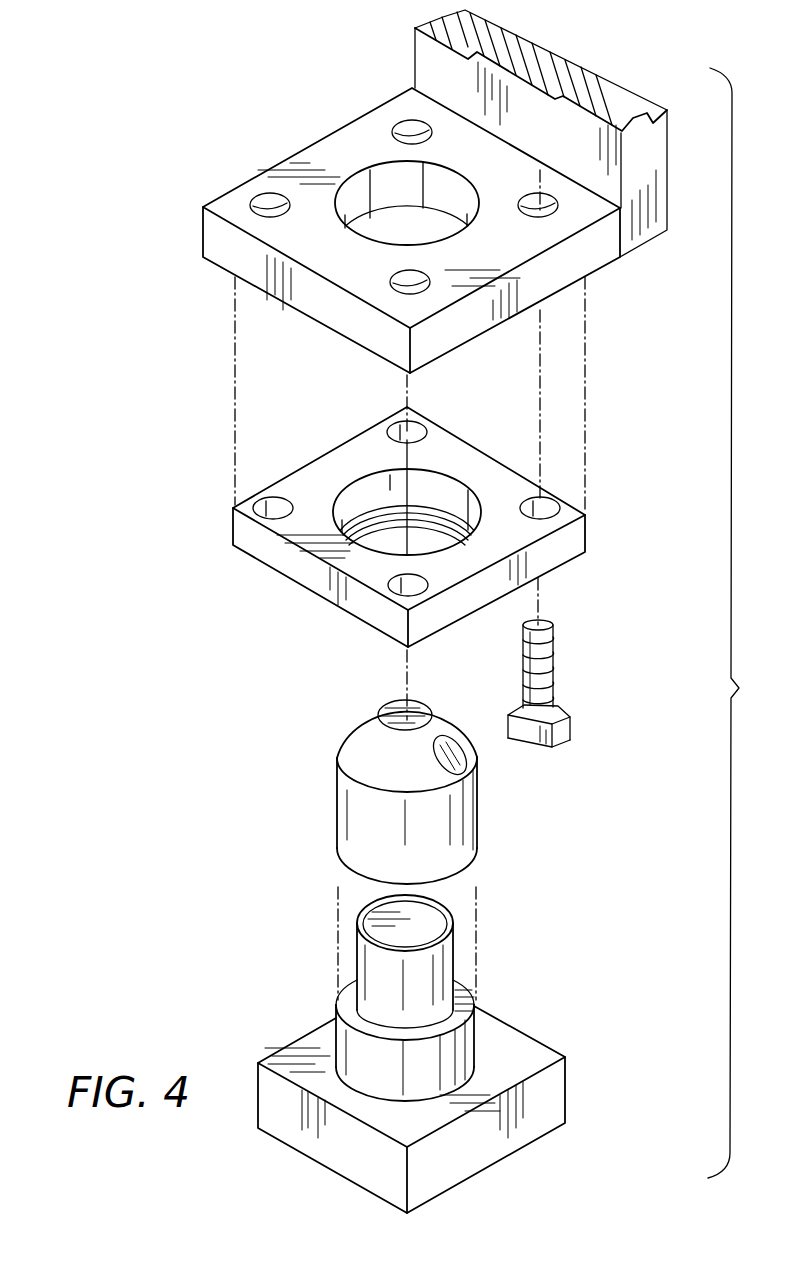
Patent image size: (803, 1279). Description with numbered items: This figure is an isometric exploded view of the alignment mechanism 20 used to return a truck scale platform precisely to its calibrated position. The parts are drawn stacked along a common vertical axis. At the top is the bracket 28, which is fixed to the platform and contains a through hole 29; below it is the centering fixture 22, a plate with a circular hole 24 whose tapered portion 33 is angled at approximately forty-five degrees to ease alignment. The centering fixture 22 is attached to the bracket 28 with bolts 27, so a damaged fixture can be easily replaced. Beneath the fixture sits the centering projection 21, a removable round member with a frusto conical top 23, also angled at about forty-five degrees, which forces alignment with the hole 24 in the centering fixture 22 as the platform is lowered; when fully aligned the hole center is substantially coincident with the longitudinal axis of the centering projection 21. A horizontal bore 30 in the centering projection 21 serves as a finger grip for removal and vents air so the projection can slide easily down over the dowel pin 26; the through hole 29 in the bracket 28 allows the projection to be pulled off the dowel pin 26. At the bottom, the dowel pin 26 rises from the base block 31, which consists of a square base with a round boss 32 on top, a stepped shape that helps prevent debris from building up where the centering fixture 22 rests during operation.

The alignment mechanism 20 is at (184, 633).
The centering projection 21 is at (460, 823).
The centering fixture 22 is at (313, 573).
The frusto conical top 23 is at (358, 725).
The hole 24 is at (447, 488).
The dowel pin 26 is at (435, 975).
The bolt 27 is at (553, 677).
The bracket 28 is at (213, 243).
The through hole 29 is at (370, 190).
The horizontal bore 30 is at (450, 752).
The base block 31 is at (547, 1045).
The round boss 32 is at (457, 1035).
The tapered portion 33 is at (433, 512).